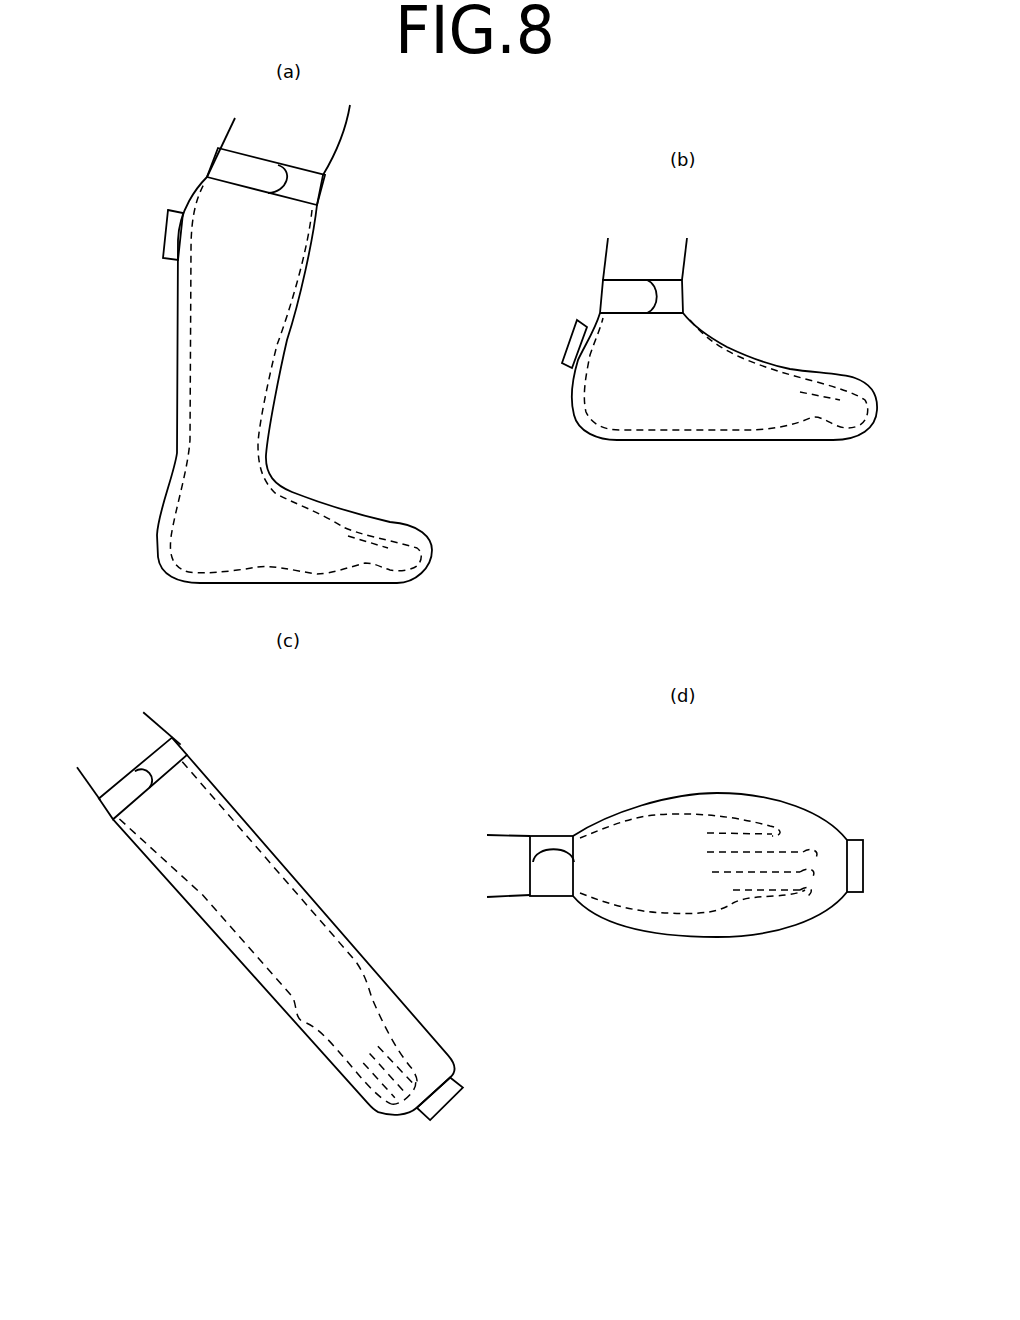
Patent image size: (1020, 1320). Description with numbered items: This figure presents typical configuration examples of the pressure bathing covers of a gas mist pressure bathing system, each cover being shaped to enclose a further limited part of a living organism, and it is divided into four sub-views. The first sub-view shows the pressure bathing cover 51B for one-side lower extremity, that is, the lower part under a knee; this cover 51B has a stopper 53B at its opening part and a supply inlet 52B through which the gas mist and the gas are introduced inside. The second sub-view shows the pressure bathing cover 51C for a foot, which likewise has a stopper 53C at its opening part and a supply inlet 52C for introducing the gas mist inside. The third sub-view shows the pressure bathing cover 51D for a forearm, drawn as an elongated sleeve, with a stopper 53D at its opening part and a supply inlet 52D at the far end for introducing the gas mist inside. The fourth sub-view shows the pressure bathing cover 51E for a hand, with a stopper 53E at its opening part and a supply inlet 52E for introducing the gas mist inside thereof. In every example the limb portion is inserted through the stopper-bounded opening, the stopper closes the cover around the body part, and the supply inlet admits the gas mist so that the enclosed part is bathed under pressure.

The pressure bathing cover 51B is at (375, 166).
The supply inlet 52B is at (165, 231).
The stopper 53B is at (322, 187).
The pressure bathing cover 51C is at (805, 268).
The supply inlet 52C is at (562, 341).
The stopper 53C is at (600, 295).
The pressure bathing cover 51D is at (308, 762).
The supply inlet 52D is at (463, 1088).
The stopper 53D is at (183, 743).
The pressure bathing cover 51E is at (808, 796).
The supply inlet 52E is at (853, 893).
The stopper 53E is at (545, 835).